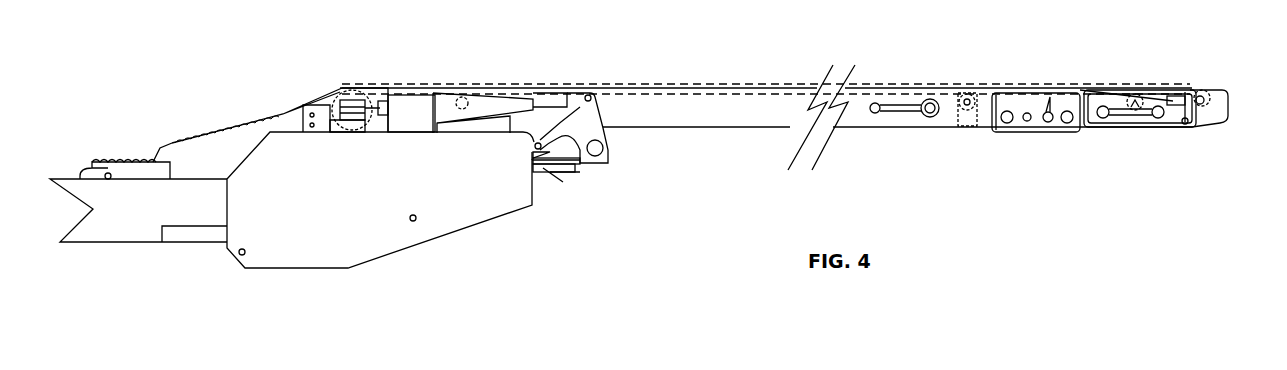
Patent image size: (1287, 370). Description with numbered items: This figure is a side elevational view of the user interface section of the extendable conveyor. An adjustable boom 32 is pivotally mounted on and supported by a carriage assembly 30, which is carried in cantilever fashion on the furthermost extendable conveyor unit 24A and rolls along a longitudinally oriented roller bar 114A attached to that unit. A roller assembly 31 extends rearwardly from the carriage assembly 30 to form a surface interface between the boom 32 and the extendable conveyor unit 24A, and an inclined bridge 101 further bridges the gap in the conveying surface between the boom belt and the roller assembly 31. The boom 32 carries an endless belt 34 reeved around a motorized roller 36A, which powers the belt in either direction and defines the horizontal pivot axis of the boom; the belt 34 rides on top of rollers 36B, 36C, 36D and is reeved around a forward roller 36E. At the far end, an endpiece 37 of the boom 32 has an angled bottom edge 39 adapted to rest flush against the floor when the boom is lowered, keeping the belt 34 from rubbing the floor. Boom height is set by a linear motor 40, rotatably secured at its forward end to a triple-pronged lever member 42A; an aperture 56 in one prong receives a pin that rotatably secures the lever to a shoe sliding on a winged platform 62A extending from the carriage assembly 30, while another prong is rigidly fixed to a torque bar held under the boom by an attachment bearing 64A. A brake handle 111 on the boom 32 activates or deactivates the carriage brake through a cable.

The extendable conveyor unit 24A is at (108, 228).
The extendable conveyor unit roller bar 114A is at (193, 235).
The carriage assembly 30 is at (337, 257).
The roller assembly 31 is at (222, 150).
The inclined bridge 101 is at (292, 113).
The endless belt 34 is at (363, 85).
The roller 36A is at (355, 130).
The linear motor 40 is at (400, 135).
The roller 36B is at (462, 103).
The boom 32 is at (753, 105).
The triple-pronged lever member 42A is at (592, 135).
The attachment bearing 64A is at (608, 163).
The winged platform 62A is at (542, 167).
The aperture 56 is at (530, 150).
The brake handle 111 is at (897, 112).
The roller 36C is at (967, 94).
The roller 36D is at (1140, 92).
The forward roller 36E is at (1205, 88).
The endpiece 37 is at (1225, 110).
The angled bottom edge 39 is at (1185, 124).